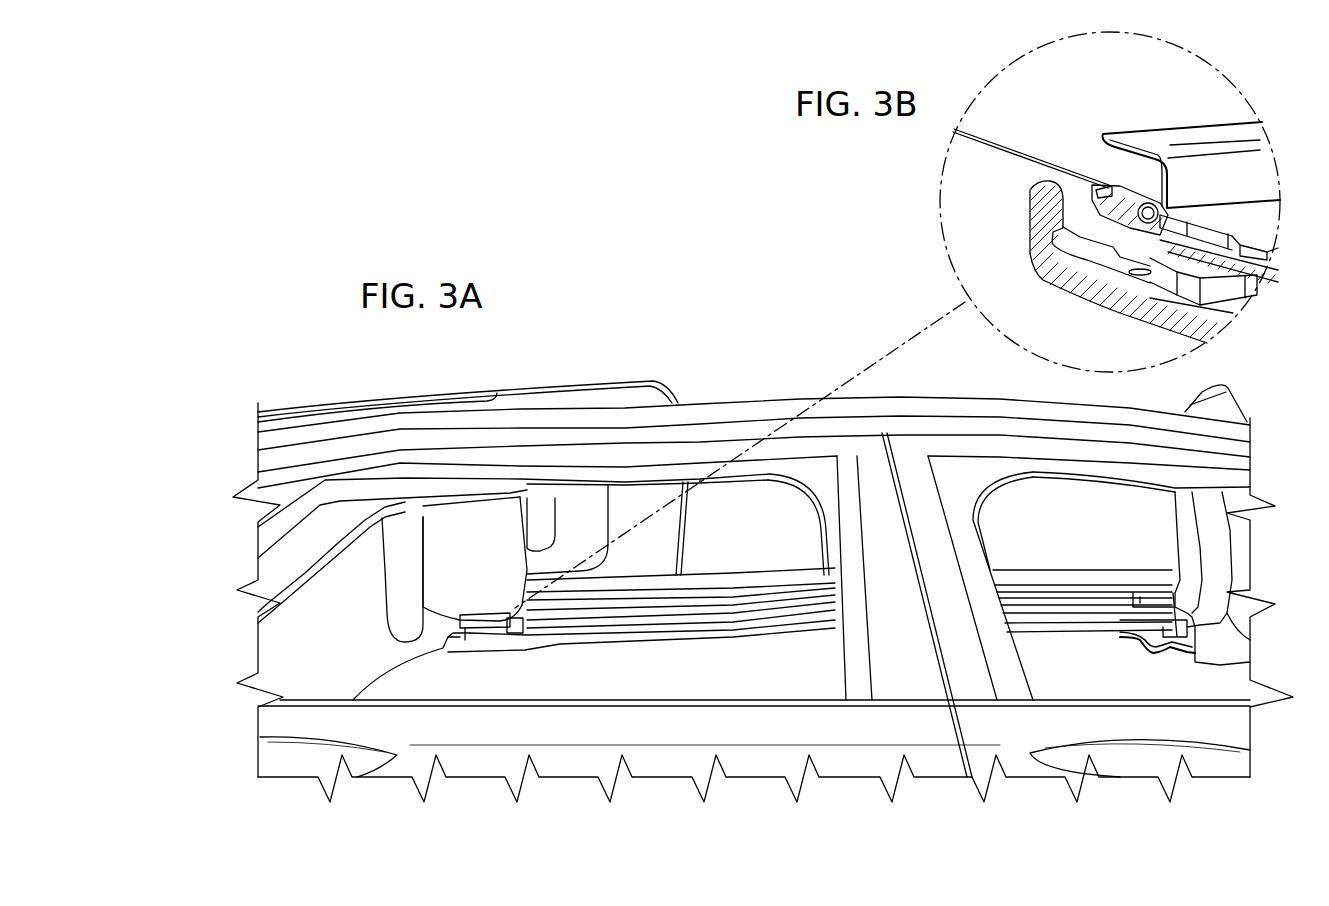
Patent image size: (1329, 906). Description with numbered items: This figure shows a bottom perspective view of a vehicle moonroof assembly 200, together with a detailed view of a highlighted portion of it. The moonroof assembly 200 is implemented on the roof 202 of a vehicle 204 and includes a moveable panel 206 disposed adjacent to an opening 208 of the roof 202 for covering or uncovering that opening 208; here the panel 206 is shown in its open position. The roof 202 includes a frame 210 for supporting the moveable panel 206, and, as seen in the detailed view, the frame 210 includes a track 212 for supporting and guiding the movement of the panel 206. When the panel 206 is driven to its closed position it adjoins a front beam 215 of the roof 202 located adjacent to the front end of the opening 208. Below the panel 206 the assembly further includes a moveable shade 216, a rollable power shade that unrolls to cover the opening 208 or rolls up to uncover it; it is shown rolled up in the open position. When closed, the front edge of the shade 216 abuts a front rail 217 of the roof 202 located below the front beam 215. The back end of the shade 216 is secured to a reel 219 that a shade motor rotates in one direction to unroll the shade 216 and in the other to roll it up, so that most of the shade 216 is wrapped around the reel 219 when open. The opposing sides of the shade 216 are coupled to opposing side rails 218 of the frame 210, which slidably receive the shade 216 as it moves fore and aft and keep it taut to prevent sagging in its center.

In FIG. 3A, the moonroof assembly 200 is at (808, 348).
In FIG. 3A, the roof 202 is at (704, 405).
In FIG. 3A, the vehicle 204 is at (283, 720).
In FIG. 3A, the moveable panel 206 is at (537, 390).
In FIG. 3A, the opening 208 is at (792, 526).
In FIG. 3A, the frame 210 is at (523, 622).
In FIG. 3B, the track 212 is at (1250, 218).
In FIG. 3A, the front beam 215 is at (1222, 410).
In FIG. 3A, the moveable shade 216 is at (468, 533).
In FIG. 3B, the moveable shade 216 is at (976, 142).
In FIG. 3A, the front rail 217 is at (1190, 523).
In FIG. 3B, the side rails 218 is at (1118, 190).
In FIG. 3A, the reel 219 is at (310, 579).